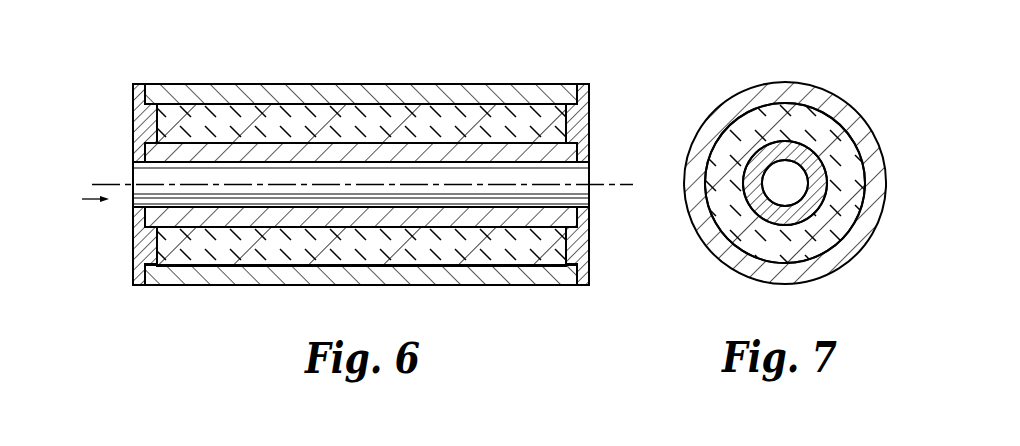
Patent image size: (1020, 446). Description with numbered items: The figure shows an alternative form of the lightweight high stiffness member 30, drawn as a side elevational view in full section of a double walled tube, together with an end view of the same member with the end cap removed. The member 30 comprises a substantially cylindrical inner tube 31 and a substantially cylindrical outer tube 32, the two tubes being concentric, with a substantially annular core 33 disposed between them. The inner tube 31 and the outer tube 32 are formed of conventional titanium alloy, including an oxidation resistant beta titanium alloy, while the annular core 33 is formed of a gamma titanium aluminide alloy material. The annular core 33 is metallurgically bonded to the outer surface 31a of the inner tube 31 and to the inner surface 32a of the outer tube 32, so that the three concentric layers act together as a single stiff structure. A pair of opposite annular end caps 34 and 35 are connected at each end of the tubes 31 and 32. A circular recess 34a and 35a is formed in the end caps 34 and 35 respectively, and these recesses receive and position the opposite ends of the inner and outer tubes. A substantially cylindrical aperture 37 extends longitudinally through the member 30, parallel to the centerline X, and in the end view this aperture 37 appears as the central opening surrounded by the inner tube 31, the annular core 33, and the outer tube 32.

In FIG. 6, the lightweight high stiffness member 30 is at (82, 202).
In FIG. 6, the inner tube 31 is at (575, 131).
In FIG. 7, the inner tube 31 is at (808, 162).
In FIG. 6, the outer surface of inner tube 31a is at (556, 242).
In FIG. 6, the outer tube 32 is at (512, 90).
In FIG. 7, the outer tube 32 is at (817, 97).
In FIG. 6, the inner surface of outer tube 32a is at (574, 101).
In FIG. 6, the annular core 33 is at (167, 118).
In FIG. 7, the annular core 33 is at (841, 206).
In FIG. 6, the end cap 34 is at (141, 260).
In FIG. 6, the circular recess 34a is at (138, 217).
In FIG. 6, the end cap 35 is at (588, 272).
In FIG. 6, the circular recess 35a is at (571, 148).
In FIG. 6, the cylindrical aperture 37 is at (572, 186).
In FIG. 7, the cylindrical aperture 37 is at (786, 173).
In FIG. 6, the centerline X is at (98, 183).